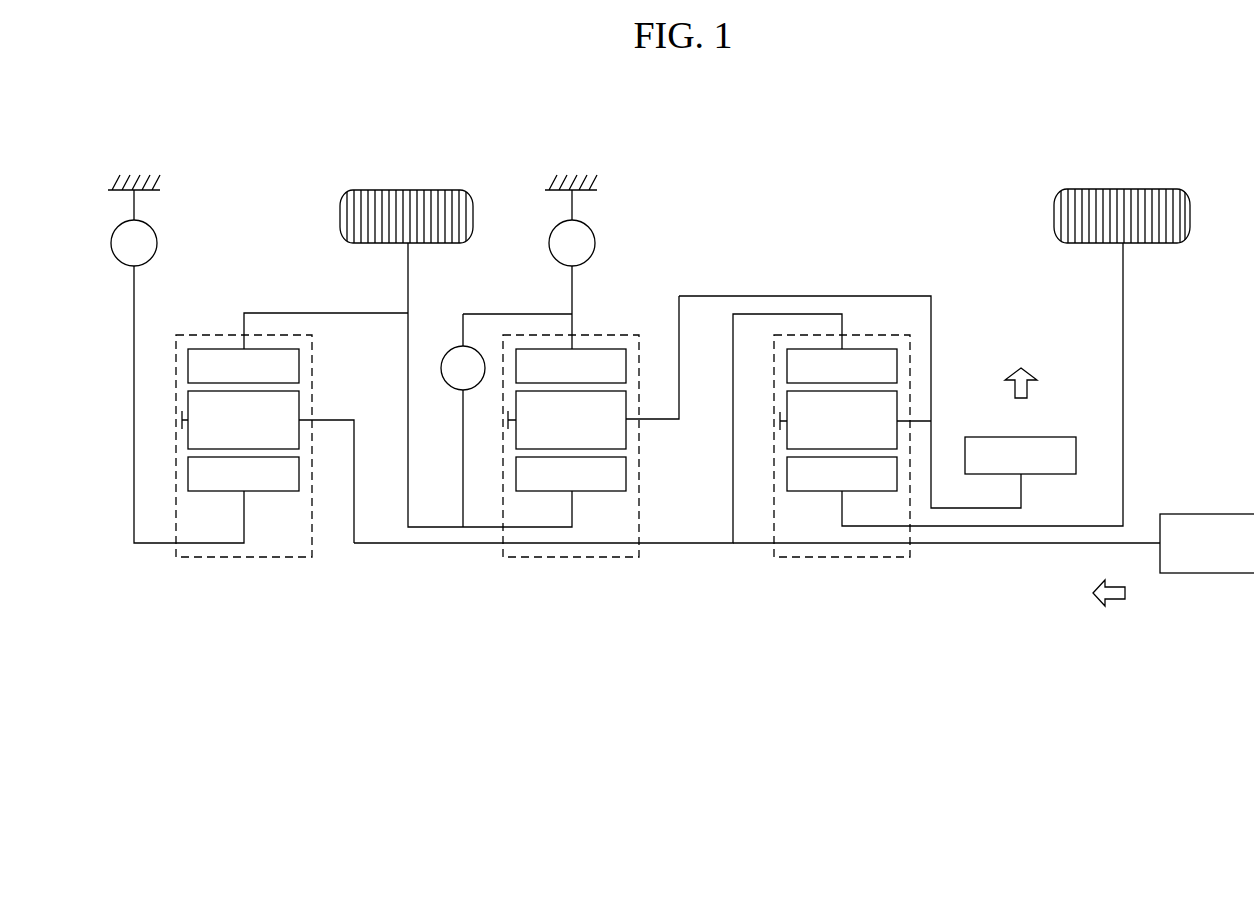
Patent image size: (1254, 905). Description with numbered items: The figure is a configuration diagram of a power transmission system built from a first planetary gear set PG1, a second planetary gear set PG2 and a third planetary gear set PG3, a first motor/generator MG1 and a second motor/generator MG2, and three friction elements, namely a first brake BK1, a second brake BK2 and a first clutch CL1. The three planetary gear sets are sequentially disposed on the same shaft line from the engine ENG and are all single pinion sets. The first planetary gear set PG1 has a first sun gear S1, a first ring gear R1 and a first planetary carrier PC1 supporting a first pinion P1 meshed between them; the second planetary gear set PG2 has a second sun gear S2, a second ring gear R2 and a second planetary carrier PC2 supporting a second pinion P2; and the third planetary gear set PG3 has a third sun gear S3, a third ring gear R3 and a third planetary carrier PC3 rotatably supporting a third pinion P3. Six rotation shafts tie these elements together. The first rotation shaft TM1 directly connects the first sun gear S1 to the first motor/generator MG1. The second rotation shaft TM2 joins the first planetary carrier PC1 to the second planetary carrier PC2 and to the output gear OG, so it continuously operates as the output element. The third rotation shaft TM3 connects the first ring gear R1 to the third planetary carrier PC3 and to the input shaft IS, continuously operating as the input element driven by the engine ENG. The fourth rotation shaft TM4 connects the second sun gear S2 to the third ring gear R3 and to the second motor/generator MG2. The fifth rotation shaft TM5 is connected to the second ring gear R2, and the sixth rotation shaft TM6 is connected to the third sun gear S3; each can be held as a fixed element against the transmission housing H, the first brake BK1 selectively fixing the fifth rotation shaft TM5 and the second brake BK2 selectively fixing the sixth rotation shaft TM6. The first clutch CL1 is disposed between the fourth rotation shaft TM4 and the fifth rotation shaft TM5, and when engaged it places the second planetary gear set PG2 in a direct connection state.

The transmission housing H is at (142, 180).
The first brake BK1 is at (572, 228).
The second brake BK2 is at (134, 228).
The first clutch CL1 is at (463, 368).
The first motor/generator MG1 is at (1054, 213).
The second motor/generator MG2 is at (340, 213).
The first planetary gear set PG1 is at (842, 494).
The second planetary gear set PG2 is at (571, 493).
The third planetary gear set PG3 is at (244, 493).
The first ring gear R1 is at (842, 366).
The second ring gear R2 is at (571, 366).
The third ring gear R3 is at (243, 366).
The first pinion P1 is at (838, 420).
The second pinion P2 is at (567, 420).
The third pinion P3 is at (240, 420).
The first sun gear S1 is at (842, 474).
The second sun gear S2 is at (571, 474).
The third sun gear S3 is at (243, 474).
The first planetary carrier PC1 is at (920, 420).
The second planetary carrier PC2 is at (657, 421).
The third planetary carrier PC3 is at (327, 420).
The first rotation shaft TM1 is at (966, 532).
The second rotation shaft TM2 is at (847, 294).
The third rotation shaft TM3 is at (685, 545).
The fourth rotation shaft TM4 is at (437, 530).
The fifth rotation shaft TM5 is at (570, 292).
The sixth rotation shaft TM6 is at (205, 545).
The input shaft IS is at (1032, 543).
The output gear OG is at (1020, 421).
The engine ENG is at (1173, 560).